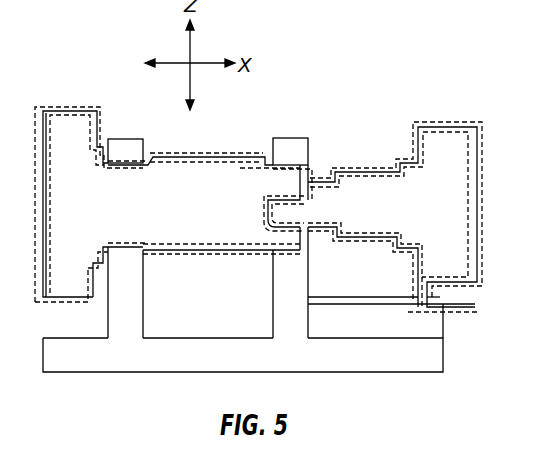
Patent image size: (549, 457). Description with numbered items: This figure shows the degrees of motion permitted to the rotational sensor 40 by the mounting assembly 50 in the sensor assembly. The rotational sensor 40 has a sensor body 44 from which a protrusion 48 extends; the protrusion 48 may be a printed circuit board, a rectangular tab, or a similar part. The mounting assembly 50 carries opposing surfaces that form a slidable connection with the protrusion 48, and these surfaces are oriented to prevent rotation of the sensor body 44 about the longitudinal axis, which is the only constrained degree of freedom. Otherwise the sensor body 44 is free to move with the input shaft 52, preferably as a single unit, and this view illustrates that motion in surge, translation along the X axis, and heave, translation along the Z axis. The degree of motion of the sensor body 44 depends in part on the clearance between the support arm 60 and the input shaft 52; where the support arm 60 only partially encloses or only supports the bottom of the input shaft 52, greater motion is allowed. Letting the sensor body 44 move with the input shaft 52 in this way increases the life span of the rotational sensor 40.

The rotational sensor 40 is at (482, 82).
The sensor body 44 is at (445, 142).
The protrusion 48 is at (425, 296).
The mounting assembly 50 is at (405, 362).
The input shaft 52 is at (213, 180).
The support arm 60 is at (132, 300).